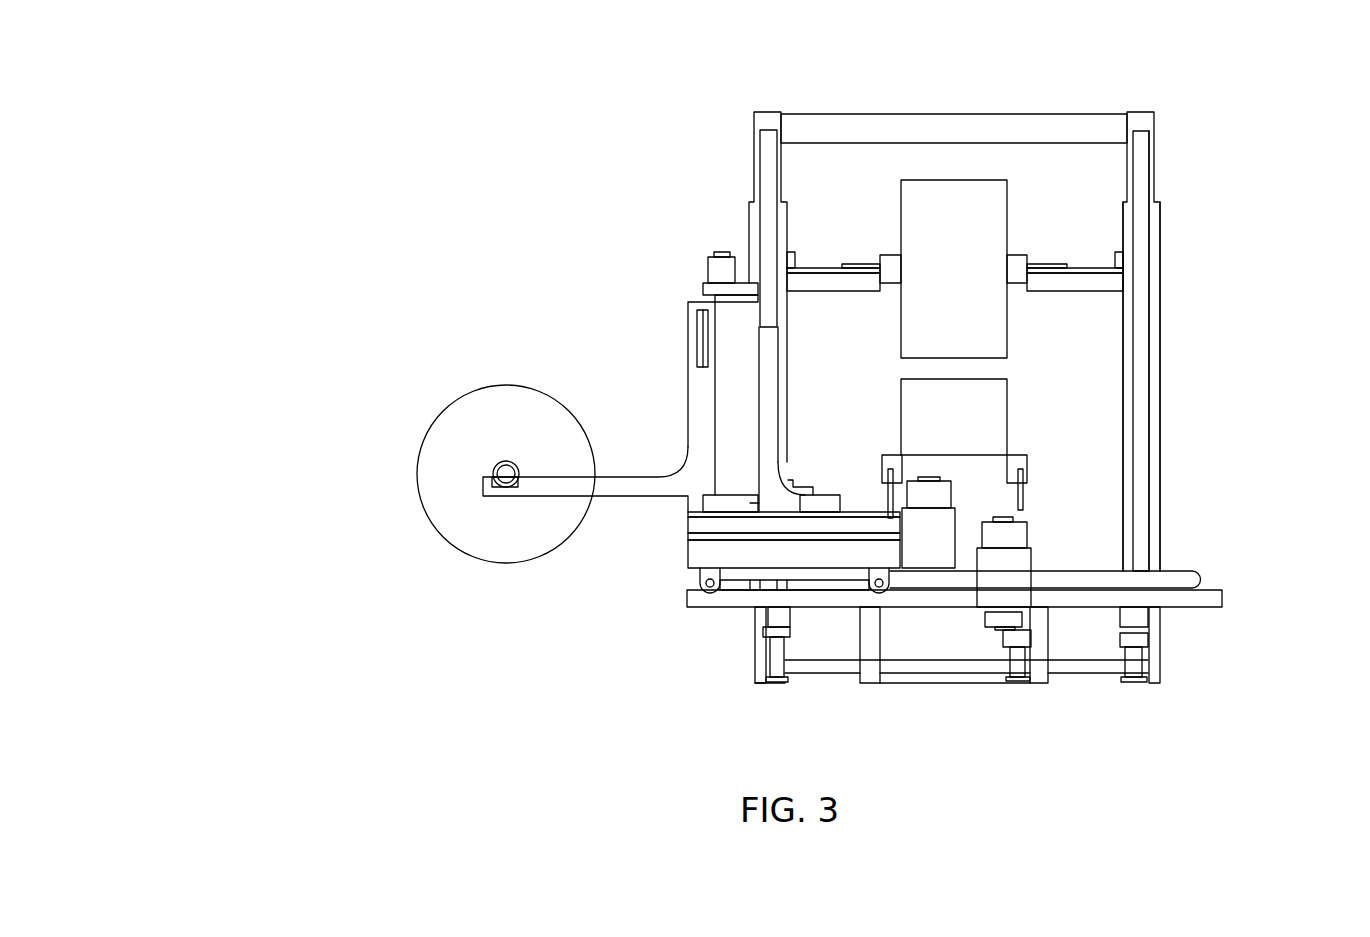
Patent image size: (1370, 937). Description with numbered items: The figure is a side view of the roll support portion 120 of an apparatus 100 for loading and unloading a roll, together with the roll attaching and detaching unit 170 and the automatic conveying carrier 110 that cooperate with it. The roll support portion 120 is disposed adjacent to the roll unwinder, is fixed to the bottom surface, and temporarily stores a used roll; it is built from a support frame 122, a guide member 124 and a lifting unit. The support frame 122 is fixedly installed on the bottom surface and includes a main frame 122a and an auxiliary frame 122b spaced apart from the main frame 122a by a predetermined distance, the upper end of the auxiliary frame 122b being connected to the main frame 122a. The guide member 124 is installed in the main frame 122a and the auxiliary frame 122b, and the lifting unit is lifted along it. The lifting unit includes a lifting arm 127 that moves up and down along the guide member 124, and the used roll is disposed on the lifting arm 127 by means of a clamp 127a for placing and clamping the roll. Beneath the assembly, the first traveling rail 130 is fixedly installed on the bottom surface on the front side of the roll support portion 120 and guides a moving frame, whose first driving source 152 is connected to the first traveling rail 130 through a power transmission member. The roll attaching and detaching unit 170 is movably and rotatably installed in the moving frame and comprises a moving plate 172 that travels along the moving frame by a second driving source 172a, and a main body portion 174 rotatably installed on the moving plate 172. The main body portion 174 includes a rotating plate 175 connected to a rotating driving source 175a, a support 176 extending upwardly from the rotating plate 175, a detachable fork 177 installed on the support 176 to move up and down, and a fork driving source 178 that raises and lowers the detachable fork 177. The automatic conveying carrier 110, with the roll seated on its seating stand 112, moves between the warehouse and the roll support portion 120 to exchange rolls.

The apparatus for loading and unloading a roll 100 is at (850, 34).
The automatic conveying carrier 110 is at (962, 648).
The seating stand 112 is at (1023, 478).
The roll support portion 120 is at (1184, 115).
The support frame 122 is at (1051, 346).
The main frame 122a is at (1145, 122).
The auxiliary frame 122b is at (1140, 290).
The guide member 124 is at (1157, 337).
The lifting arm 127 is at (1088, 283).
The clamp 127a is at (1047, 264).
The first traveling rail 130 is at (788, 640).
The first driving source 152 is at (1020, 560).
The roll attaching and detaching unit 170 is at (656, 346).
The moving plate 172 is at (700, 557).
The second driving source 172a is at (940, 528).
The main body portion 174 is at (352, 155).
The rotating plate 175 is at (700, 517).
The rotating driving source 175a is at (808, 487).
The support 176 is at (765, 450).
The detachable fork 177 is at (630, 488).
The fork driving source 178 is at (713, 272).